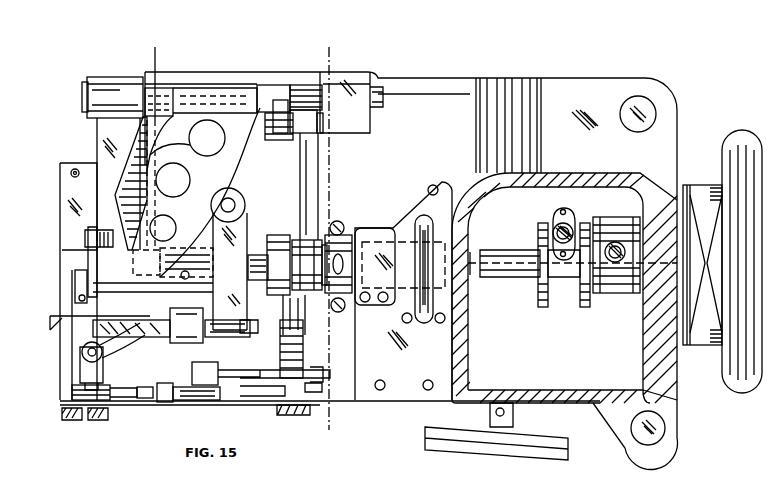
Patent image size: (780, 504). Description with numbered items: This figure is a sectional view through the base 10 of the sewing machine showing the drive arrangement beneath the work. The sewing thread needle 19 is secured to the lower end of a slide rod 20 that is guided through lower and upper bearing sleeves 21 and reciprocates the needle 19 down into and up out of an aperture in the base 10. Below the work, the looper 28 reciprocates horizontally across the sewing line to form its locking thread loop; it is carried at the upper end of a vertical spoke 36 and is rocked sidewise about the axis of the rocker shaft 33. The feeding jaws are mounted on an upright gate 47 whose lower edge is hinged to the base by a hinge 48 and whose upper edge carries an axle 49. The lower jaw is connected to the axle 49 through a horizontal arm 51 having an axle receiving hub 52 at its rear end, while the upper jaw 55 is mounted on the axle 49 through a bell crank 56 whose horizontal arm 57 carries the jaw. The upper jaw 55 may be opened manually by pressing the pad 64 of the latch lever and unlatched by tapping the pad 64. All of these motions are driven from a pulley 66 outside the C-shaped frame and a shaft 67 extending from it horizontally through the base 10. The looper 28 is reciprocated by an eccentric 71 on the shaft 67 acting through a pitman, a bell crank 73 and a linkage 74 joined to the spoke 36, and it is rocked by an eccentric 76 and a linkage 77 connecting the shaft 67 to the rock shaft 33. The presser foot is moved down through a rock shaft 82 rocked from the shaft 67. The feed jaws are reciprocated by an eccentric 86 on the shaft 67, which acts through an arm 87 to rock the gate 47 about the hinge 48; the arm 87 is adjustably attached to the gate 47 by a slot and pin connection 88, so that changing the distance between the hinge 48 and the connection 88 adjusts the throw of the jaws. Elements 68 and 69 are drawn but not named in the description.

The base 10 is at (354, 186).
The sewing thread needle 19 is at (170, 60).
The slide rod 20 is at (343, 62).
The bearing sleeves 21 is at (487, 407).
The looper 28 is at (58, 322).
The rocker shaft 33 is at (157, 337).
The vertical spoke 36 is at (103, 372).
The gate 47 is at (163, 88).
The hinge 48 is at (302, 88).
The axle 49 is at (86, 85).
The horizontal arm 51 is at (232, 158).
The axle receiving hub 52 is at (224, 90).
The upper jaw 55 is at (78, 286).
The bell crank 56 is at (105, 77).
The horizontal arm 57 is at (95, 147).
The pad 64 is at (482, 448).
The pulley 66 is at (685, 182).
The shaft 67 is at (507, 278).
The gear 68 is at (548, 278).
The bearing bracket 69 is at (556, 222).
The eccentric 71 is at (345, 230).
The bell crank 73 is at (226, 372).
The linkage 74 is at (152, 397).
The eccentric 76 is at (203, 270).
The linkage 77 is at (186, 308).
The rock shaft 82 is at (620, 242).
The eccentric 86 is at (290, 232).
The arm 87 is at (302, 183).
The slot and pin connection 88 is at (323, 128).